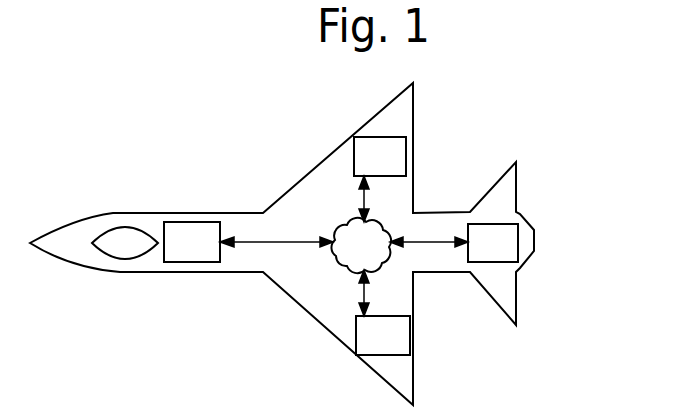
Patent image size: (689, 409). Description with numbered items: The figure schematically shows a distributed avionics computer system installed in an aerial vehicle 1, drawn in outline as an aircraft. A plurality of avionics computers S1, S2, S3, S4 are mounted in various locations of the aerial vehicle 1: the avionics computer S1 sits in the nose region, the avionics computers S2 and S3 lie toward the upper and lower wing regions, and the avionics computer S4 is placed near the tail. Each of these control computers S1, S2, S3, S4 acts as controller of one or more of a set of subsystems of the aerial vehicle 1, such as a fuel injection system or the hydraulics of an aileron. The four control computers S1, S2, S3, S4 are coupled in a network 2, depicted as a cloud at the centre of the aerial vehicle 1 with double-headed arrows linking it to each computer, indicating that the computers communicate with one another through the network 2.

The aerial vehicle 1 is at (112, 213).
The network 2 is at (386, 237).
The avionics computer S1 is at (206, 255).
The avionics computer S2 is at (394, 168).
The avionics computer S3 is at (397, 348).
The avionics computer S4 is at (507, 255).